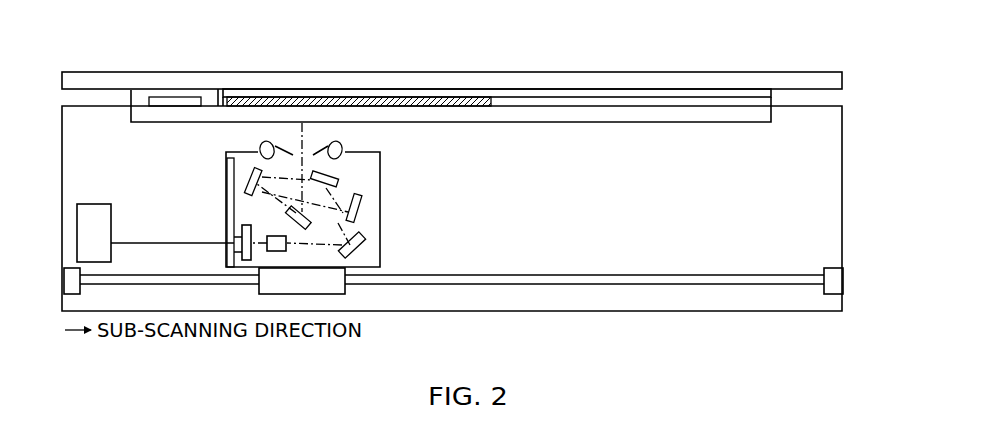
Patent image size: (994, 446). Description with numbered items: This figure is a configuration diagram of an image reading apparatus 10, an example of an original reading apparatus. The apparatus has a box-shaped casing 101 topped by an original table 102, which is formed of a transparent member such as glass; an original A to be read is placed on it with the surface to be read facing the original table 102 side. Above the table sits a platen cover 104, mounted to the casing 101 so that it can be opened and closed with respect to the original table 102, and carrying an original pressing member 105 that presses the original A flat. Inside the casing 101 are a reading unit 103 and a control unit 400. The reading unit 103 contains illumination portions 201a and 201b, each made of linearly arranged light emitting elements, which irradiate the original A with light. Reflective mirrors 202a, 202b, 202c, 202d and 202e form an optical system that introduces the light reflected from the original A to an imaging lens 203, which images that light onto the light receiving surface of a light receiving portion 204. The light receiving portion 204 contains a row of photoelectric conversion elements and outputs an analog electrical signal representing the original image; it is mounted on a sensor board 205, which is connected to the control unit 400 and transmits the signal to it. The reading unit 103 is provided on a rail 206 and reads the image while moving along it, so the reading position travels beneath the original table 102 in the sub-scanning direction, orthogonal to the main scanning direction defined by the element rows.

The image reading apparatus 10 is at (150, 53).
The casing 101 is at (843, 205).
The original table 102 is at (762, 122).
The reading unit 103 is at (381, 209).
The platen cover 104 is at (623, 72).
The original pressing member 105 is at (680, 89).
The original A is at (458, 97).
The illumination portion 201a is at (261, 146).
The illumination portion 201b is at (342, 145).
The reflective mirror 202a is at (312, 222).
The reflective mirror 202b is at (361, 201).
The reflective mirror 202c is at (247, 184).
The reflective mirror 202d is at (339, 183).
The reflective mirror 202e is at (363, 253).
The imaging lens 203 is at (277, 236).
The light receiving portion 204 is at (246, 226).
The sensor board 205 is at (226, 243).
The rail 206 is at (660, 275).
The control unit 400 is at (96, 204).